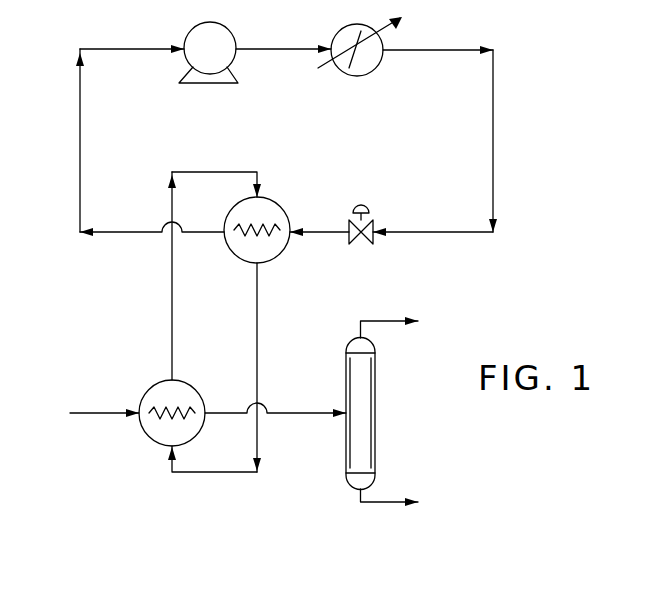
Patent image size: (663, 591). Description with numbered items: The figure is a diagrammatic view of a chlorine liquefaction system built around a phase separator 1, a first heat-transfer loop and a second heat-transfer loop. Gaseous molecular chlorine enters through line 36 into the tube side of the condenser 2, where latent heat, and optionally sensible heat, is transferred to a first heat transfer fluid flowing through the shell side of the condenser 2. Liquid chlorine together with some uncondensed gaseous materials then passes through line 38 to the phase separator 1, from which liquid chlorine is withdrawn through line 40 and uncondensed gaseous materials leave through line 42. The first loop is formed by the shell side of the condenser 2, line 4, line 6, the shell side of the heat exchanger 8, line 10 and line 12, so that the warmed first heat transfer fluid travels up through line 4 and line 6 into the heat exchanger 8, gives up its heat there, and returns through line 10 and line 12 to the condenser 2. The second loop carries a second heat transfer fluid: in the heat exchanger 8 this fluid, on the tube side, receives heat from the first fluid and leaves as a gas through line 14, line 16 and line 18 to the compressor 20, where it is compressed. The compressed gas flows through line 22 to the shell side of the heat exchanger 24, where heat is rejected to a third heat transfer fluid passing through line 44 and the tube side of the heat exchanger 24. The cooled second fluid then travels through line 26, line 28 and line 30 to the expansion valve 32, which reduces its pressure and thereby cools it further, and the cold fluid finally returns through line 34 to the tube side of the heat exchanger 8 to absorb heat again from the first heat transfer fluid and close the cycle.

The phase separator 1 is at (378, 400).
The condenser 2 is at (150, 386).
The line 4 is at (172, 296).
The line 6 is at (210, 172).
The heat exchanger 8 is at (276, 206).
The line 10 is at (257, 318).
The line 12 is at (200, 472).
The line 14 is at (120, 232).
The line 16 is at (80, 148).
The line 18 is at (125, 48).
The compressor 20 is at (192, 26).
The line 22 is at (287, 48).
The heat exchanger 24 is at (346, 26).
The line 26 is at (440, 50).
The line 28 is at (493, 107).
The line 30 is at (432, 233).
The expansion valve 32 is at (366, 206).
The line 34 is at (331, 233).
The line 36 is at (100, 412).
The line 38 is at (233, 412).
The line 40 is at (392, 503).
The line 42 is at (392, 320).
The line 44 is at (325, 72).